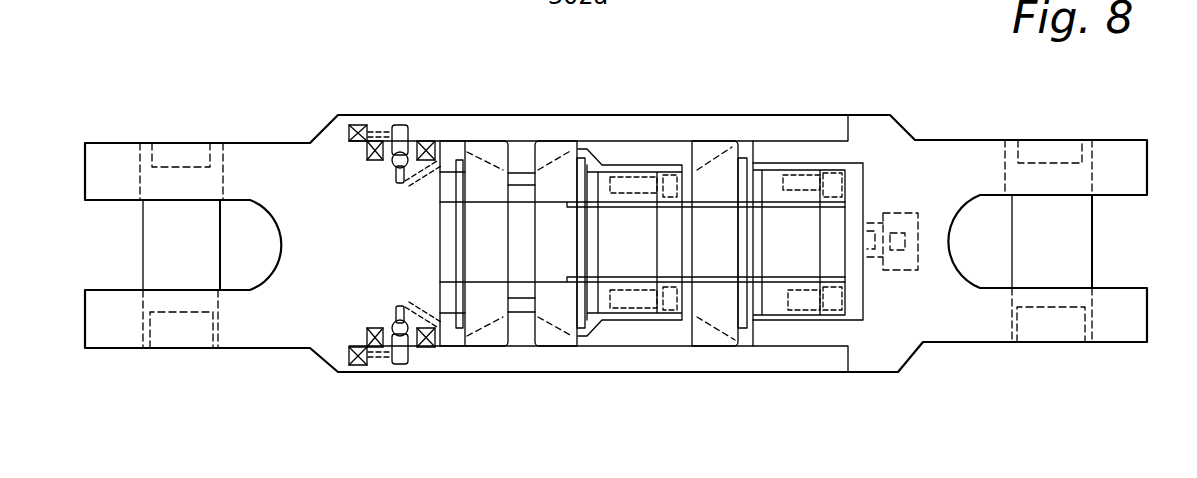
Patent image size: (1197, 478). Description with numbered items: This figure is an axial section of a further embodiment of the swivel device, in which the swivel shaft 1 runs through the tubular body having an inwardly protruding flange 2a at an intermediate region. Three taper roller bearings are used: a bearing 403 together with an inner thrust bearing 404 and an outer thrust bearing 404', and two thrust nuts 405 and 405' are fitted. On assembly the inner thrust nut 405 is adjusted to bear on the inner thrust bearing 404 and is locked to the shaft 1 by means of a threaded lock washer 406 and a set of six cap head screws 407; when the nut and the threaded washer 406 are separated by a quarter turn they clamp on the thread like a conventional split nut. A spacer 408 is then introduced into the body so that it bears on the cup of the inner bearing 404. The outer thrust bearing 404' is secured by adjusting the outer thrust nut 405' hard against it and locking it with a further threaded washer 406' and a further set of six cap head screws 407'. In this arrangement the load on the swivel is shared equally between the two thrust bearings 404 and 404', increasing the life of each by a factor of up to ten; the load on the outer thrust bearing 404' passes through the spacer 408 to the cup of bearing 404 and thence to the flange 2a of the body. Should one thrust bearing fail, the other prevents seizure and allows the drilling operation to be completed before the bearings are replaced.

The swivel shaft 1 is at (483, 217).
The inwardly protruding flange 2a is at (522, 160).
The taper roller bearing 403 is at (492, 340).
The inner thrust bearing 404 is at (537, 368).
The inner thrust nut 405 is at (625, 353).
The outer thrust bearing 404' is at (726, 368).
The outer thrust nut 405' is at (814, 353).
The threaded lock washer 406 is at (740, 211).
The cap head screws 407 is at (642, 206).
The spacer 408 is at (622, 153).
The threaded washer 406' is at (862, 214).
The cap head screws 407' is at (815, 211).